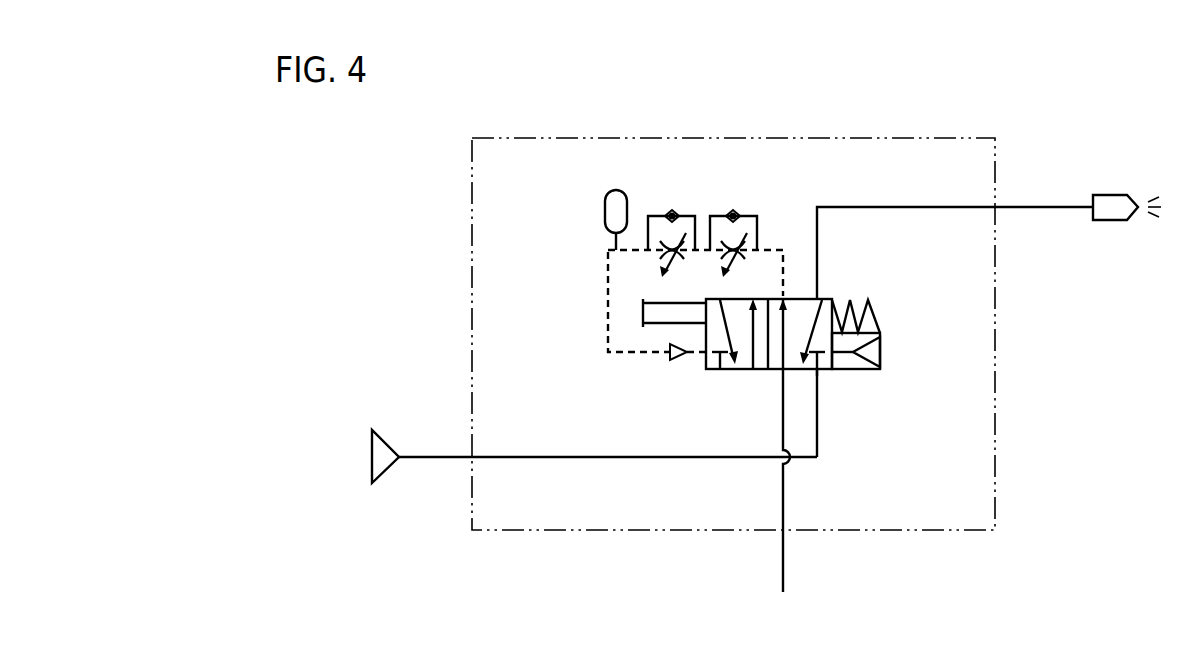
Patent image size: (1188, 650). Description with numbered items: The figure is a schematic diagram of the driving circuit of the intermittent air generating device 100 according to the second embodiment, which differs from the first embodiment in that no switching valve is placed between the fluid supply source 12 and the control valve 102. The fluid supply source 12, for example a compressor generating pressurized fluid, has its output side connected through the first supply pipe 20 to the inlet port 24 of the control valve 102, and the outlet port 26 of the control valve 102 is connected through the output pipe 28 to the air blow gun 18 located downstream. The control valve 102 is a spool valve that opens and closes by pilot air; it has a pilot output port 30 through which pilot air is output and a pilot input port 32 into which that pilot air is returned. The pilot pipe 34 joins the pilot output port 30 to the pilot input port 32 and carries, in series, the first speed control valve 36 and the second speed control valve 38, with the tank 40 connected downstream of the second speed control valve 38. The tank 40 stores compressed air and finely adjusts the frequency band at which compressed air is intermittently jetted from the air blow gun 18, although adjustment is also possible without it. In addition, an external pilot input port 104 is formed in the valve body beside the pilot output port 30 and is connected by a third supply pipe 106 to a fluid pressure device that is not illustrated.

The intermittent air generating device 100 is at (346, 168).
The fluid supply source 12 is at (371, 453).
The air blow gun 18 is at (1108, 194).
The first supply pipe 20 is at (525, 457).
The inlet port 24 is at (818, 372).
The outlet port 26 is at (786, 296).
The output pipe 28 is at (882, 207).
The pilot output port 30 is at (819, 297).
The pilot input port 32 is at (704, 354).
The pilot pipe 34 is at (607, 300).
The first speed control valve 36 is at (749, 202).
The second speed control valve 38 is at (688, 203).
The tank 40 is at (605, 212).
The control valve 102 is at (733, 377).
The external pilot input port 104 is at (782, 372).
The third supply pipe 106 is at (786, 497).